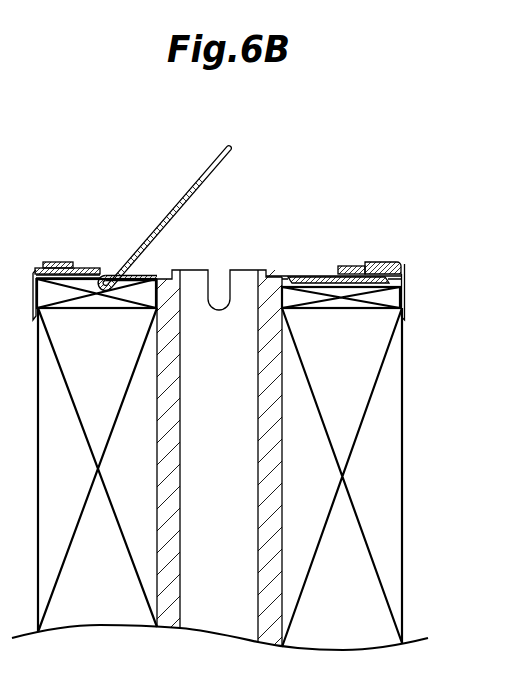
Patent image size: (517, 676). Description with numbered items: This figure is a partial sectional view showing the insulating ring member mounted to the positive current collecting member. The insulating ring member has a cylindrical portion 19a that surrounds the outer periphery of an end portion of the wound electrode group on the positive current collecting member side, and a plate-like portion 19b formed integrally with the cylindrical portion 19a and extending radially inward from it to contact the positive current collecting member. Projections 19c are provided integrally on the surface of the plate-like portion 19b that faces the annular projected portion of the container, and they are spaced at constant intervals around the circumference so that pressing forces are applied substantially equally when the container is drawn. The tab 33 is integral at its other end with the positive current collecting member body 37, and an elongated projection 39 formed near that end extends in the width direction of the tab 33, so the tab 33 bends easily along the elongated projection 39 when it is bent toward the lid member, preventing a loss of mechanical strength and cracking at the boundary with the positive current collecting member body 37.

The cylindrical portion 19a is at (406, 289).
The plate-like portion 19b is at (350, 265).
The projections 19c is at (53, 262).
The tab 33 is at (185, 192).
The positive current collecting member body 37 is at (166, 268).
The elongated projection 39 is at (124, 276).